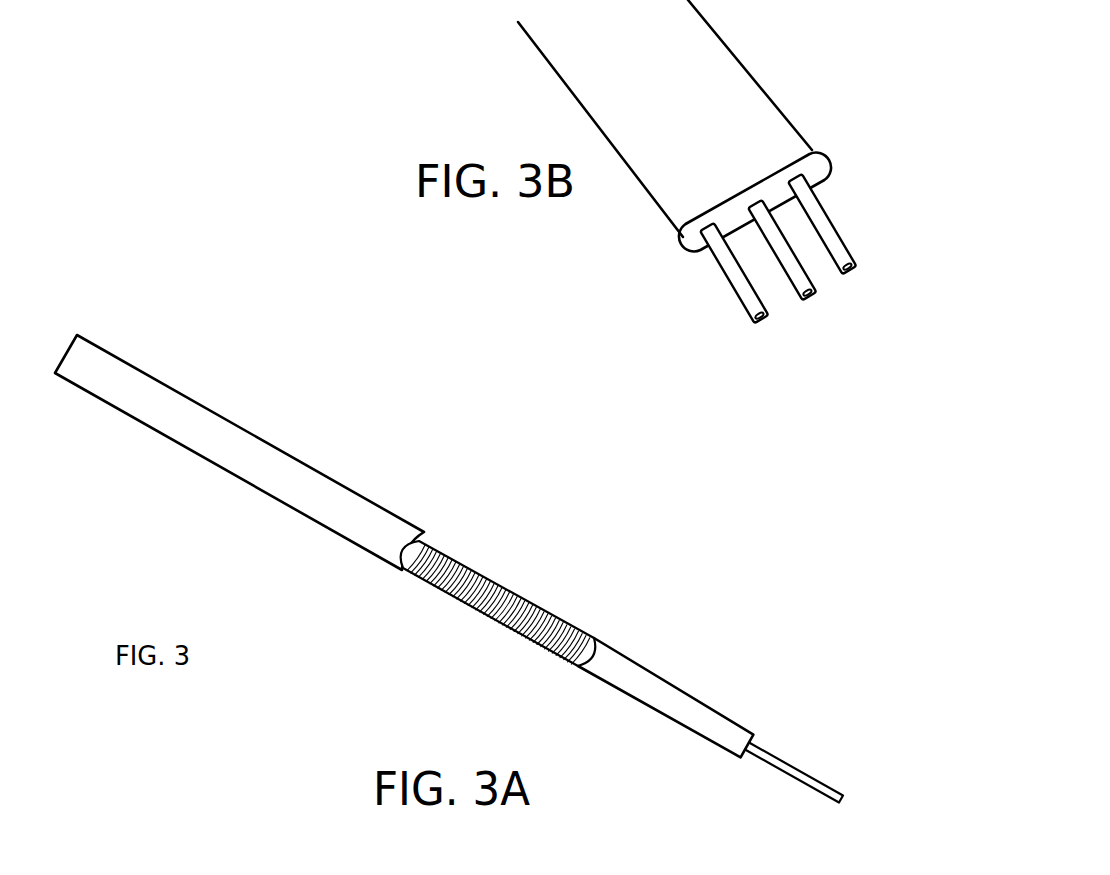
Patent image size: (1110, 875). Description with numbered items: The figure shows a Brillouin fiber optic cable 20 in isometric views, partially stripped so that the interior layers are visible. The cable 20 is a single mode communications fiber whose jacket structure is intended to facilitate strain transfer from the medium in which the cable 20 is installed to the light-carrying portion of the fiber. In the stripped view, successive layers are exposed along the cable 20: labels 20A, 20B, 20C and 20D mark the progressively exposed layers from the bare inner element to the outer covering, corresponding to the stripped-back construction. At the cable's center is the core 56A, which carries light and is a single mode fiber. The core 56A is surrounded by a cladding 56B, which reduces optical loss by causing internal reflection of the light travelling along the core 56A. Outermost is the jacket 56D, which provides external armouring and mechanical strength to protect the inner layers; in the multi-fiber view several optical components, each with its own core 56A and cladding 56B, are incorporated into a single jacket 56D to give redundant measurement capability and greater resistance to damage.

In FIG. 3A, the Brillouin fiber optic cable 20 is at (492, 490).
In FIG. 3A, the center conductor 20A is at (783, 775).
In FIG. 3A, the dielectric insulator 20B is at (627, 660).
In FIG. 3A, the braided shield 20C is at (435, 583).
In FIG. 3A, the outer jacket 20D is at (143, 424).
In FIG. 3B, the core 56A is at (867, 287).
In FIG. 3B, the cladding 56B is at (720, 262).
In FIG. 3B, the jacket 56D is at (760, 113).